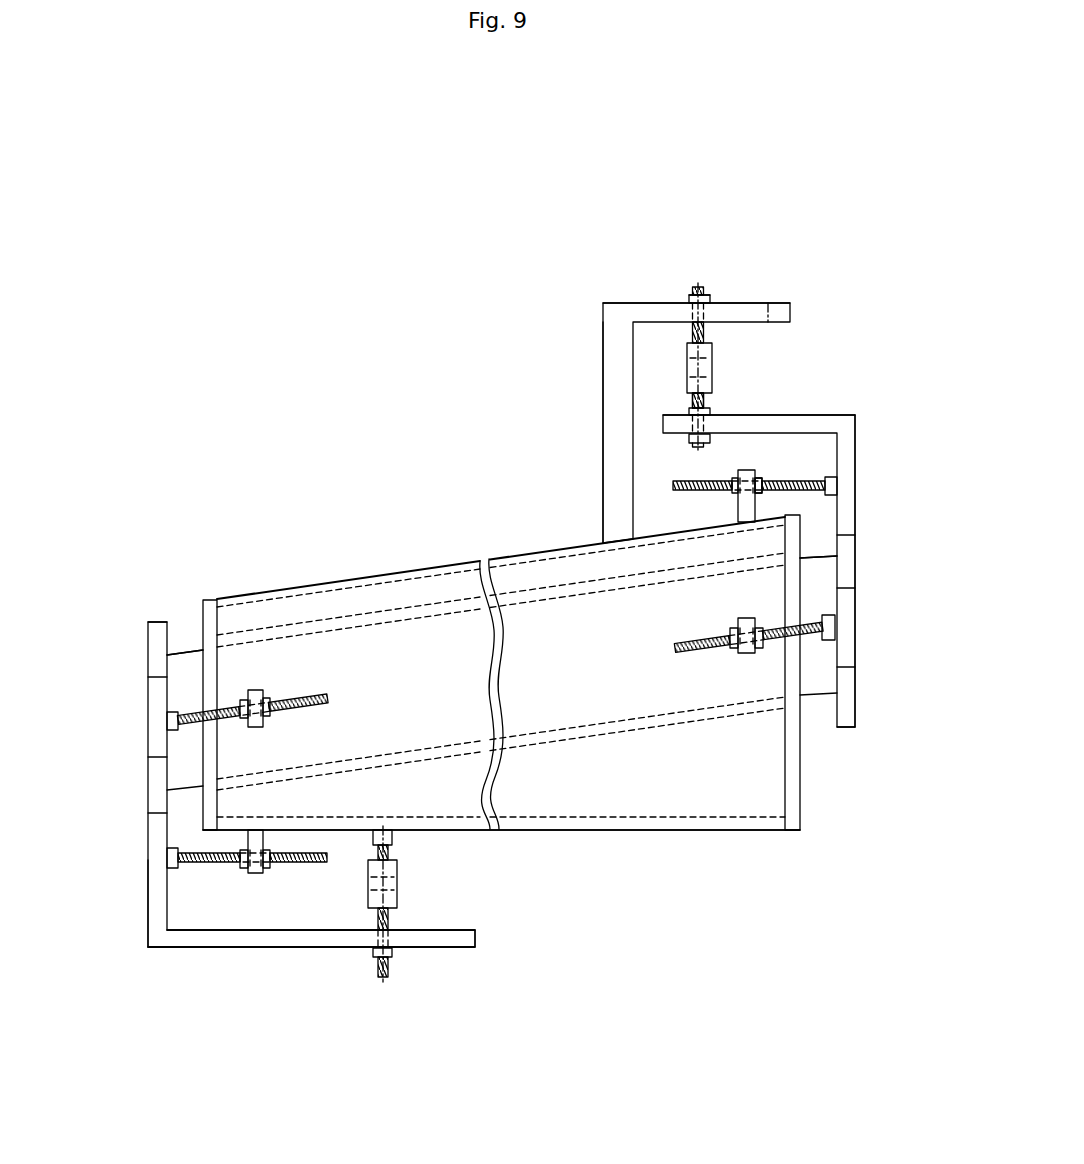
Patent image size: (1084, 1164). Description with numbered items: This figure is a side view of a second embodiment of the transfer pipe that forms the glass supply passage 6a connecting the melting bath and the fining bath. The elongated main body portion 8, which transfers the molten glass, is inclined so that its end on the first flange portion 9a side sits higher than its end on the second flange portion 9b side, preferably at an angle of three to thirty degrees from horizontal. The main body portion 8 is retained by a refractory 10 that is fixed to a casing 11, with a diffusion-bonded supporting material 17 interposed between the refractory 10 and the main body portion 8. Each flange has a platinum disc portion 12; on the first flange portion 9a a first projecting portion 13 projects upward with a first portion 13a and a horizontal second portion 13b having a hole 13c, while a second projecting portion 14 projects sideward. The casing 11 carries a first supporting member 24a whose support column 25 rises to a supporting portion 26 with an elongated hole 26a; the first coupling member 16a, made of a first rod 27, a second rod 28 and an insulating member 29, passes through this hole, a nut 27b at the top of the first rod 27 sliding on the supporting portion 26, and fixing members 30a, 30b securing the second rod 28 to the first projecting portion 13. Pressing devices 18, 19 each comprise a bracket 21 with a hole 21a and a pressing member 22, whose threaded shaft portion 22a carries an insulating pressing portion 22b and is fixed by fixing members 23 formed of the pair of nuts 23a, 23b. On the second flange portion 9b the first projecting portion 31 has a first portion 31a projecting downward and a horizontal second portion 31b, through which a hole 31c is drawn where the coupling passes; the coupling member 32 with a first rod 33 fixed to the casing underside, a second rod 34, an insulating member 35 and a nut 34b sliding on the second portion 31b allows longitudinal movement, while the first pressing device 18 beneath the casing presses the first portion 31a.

The glass supply passage 6a is at (596, 152).
The main body portion 8 is at (660, 700).
The first flange portion 9a is at (848, 735).
The second flange portion 9b is at (158, 605).
The refractory 10 is at (397, 595).
The casing 11 is at (757, 833).
The disc portion 12 is at (148, 645).
The first projecting portion 13 is at (924, 382).
The first portion 13a is at (857, 458).
The second portion 13b is at (800, 415).
The hole 13c is at (690, 420).
The second projecting portion 14 is at (148, 688).
The first coupling member 16a is at (762, 327).
The supporting material 17 is at (455, 605).
The first pressing device 18 is at (257, 888).
The pressing device 19 is at (328, 688).
The bracket 21 is at (262, 695).
The hole 21a is at (252, 692).
The pressing member 22 is at (76, 722).
The shaft portion 22a is at (200, 722).
The pressing portion 22b is at (167, 723).
The fixing members 23 is at (770, 482).
The fixing member 23a is at (270, 712).
The fixing member 23b is at (247, 722).
The first supporting member 24a is at (549, 273).
The support column 25 is at (603, 356).
The supporting portion 26 is at (660, 303).
The elongated hole 26a is at (762, 303).
The first rod 27 is at (704, 328).
The nut 27b is at (688, 300).
The second rod 28 is at (713, 400).
The insulating member 29 is at (712, 365).
The fixing member 30a is at (687, 411).
The fixing member 30b is at (687, 437).
The first projecting portion 31 is at (76, 935).
The first portion 31a is at (153, 907).
The second portion 31b is at (210, 943).
The hole in lower bracket 31c is at (378, 958).
The coupling member 32 is at (550, 875).
The first rod 33 is at (392, 852).
The second rod 34 is at (390, 913).
The nut 34b is at (395, 953).
The insulating member 35 is at (397, 880).